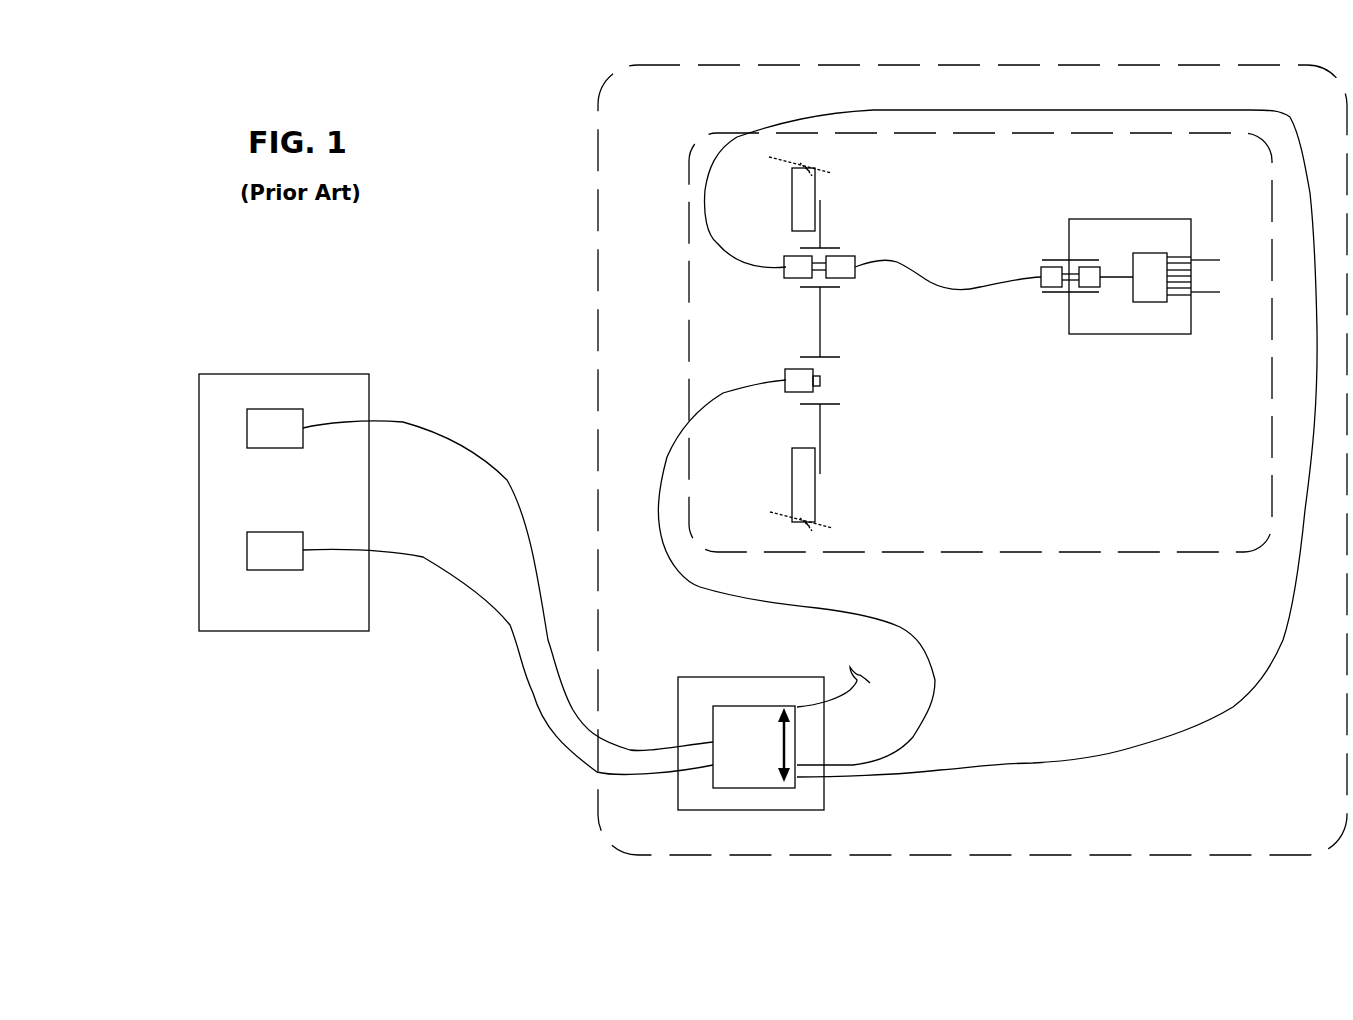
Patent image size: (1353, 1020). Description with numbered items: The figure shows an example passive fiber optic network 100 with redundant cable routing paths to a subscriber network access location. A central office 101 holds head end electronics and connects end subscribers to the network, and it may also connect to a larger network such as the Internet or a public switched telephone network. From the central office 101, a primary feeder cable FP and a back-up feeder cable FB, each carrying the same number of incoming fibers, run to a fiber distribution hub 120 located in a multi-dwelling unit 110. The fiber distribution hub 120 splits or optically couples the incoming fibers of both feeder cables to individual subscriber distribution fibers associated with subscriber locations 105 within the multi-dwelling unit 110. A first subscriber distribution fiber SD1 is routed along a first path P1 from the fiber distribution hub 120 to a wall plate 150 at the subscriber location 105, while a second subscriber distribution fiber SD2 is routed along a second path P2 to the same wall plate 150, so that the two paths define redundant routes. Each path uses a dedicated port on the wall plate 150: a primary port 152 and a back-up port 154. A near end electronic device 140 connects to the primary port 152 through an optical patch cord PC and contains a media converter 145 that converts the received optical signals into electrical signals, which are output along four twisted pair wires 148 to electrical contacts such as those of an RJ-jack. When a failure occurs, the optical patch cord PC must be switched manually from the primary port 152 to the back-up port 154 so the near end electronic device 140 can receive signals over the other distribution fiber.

The network 100 is at (450, 692).
The central office 101 is at (325, 368).
The primary feeder cable FP is at (482, 453).
The back-up feeder cable FB is at (427, 557).
The multi-dwelling unit 110 is at (1032, 853).
The fiber distribution hub 120 is at (705, 680).
The first subscriber distribution fiber SD1 is at (670, 435).
The second subscriber distribution fiber SD2 is at (1033, 765).
The first path P1 is at (945, 641).
The second path P2 is at (1178, 704).
The subscriber location 105 is at (862, 424).
The wall plate 150 is at (825, 437).
The primary port 152 is at (823, 248).
The back-up port 154 is at (827, 368).
The optical patch cord PC is at (930, 282).
The near end electronic device 140 is at (1119, 334).
The media converter 145 is at (1155, 248).
The twisted pair wires 148 is at (1188, 283).